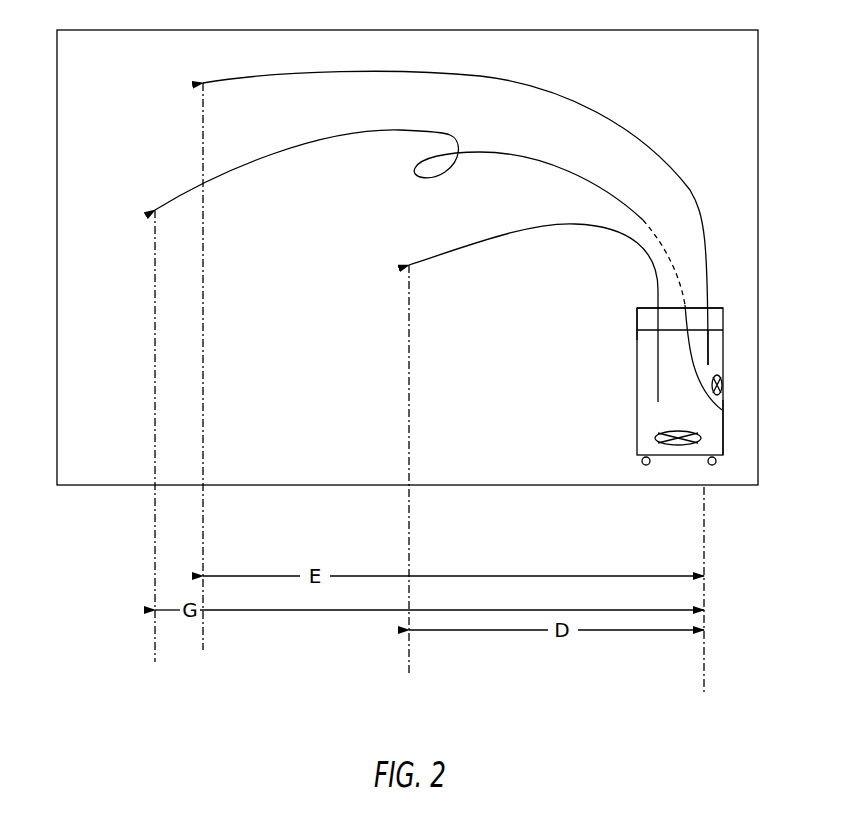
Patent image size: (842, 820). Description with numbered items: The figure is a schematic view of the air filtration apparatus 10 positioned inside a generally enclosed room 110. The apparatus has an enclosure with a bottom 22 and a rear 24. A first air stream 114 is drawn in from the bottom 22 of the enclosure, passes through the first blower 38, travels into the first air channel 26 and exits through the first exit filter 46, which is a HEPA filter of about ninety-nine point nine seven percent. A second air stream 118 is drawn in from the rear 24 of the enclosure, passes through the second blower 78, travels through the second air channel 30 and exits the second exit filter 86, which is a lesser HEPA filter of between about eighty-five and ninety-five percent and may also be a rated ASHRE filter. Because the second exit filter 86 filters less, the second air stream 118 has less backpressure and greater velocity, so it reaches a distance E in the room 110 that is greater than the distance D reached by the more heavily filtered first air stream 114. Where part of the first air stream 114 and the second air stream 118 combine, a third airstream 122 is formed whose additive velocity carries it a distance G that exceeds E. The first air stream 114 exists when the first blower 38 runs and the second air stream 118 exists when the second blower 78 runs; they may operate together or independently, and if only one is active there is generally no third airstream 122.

The air filtration apparatus 10 is at (679, 419).
The bottom 22 is at (720, 460).
The rear 24 is at (723, 435).
The first air channel 26 is at (645, 388).
The second air channel 30 is at (713, 367).
The first blower 38 is at (678, 447).
The first exit filter 46 is at (640, 318).
The second blower 78 is at (725, 383).
The second exit filter 86 is at (725, 322).
The room 110 is at (57, 460).
The first air stream 114 is at (480, 243).
The second air stream 118 is at (632, 123).
The third airstream 122 is at (273, 147).